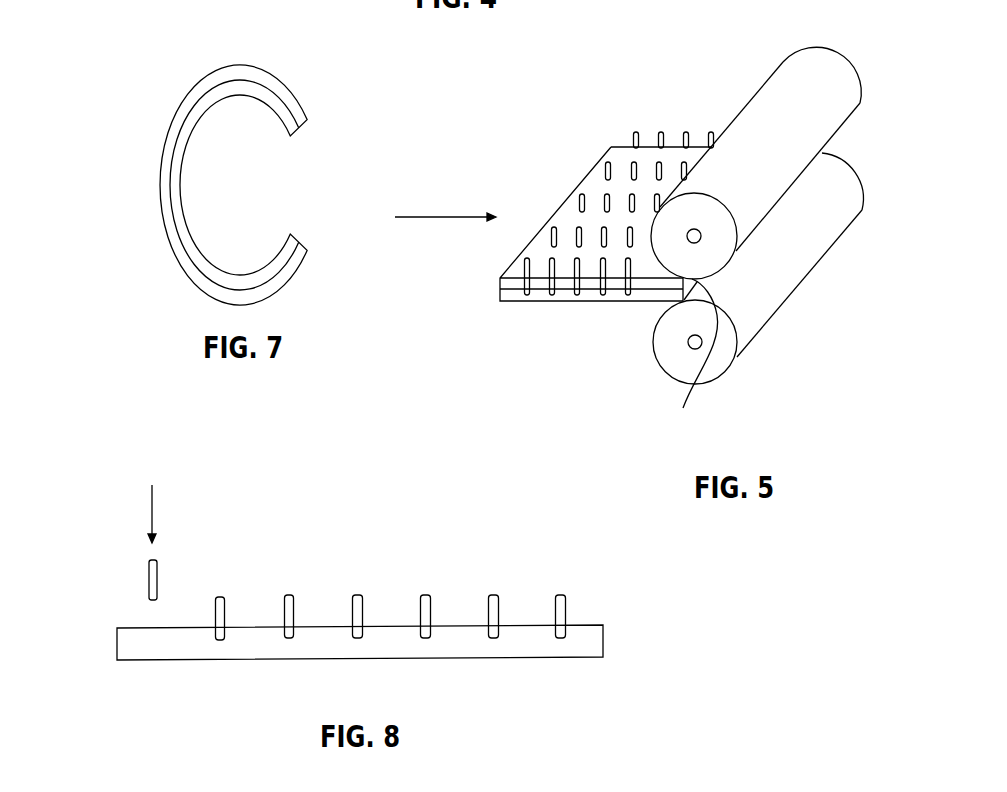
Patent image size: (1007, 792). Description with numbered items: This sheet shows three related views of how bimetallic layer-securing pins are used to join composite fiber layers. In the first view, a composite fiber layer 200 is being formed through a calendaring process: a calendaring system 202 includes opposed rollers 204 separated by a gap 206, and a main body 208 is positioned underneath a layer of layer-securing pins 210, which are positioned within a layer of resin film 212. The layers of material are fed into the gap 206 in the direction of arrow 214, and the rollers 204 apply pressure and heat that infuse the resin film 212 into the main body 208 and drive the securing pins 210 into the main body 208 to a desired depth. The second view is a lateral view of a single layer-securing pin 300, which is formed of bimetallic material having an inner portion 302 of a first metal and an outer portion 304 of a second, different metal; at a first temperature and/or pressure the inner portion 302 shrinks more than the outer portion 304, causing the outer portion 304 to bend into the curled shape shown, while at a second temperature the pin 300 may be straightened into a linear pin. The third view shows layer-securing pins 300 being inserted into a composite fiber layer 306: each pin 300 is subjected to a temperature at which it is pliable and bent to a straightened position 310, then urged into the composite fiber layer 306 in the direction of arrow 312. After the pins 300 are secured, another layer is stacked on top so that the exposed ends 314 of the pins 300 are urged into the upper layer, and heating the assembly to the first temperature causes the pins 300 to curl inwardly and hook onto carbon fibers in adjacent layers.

In FIG. 5, the composite fiber layer 200 is at (638, 222).
In FIG. 5, the calendaring system 202 is at (766, 222).
In FIG. 5, the rollers 204 is at (820, 70).
In FIG. 5, the gap 206 is at (758, 298).
In FIG. 5, the main body 208 is at (563, 201).
In FIG. 5, the layer-securing pins 210 is at (605, 171).
In FIG. 5, the resin film 212 is at (622, 146).
In FIG. 5, the arrow 214 is at (445, 215).
In FIG. 7, the layer-securing pin 300 is at (179, 169).
In FIG. 8, the layer-securing pin 300 is at (227, 613).
In FIG. 7, the inner portion 302 is at (187, 215).
In FIG. 7, the outer portion 304 is at (185, 273).
In FIG. 8, the composite fiber layer 306 is at (148, 653).
In FIG. 8, the straightened position 310 is at (147, 582).
In FIG. 8, the arrow 312 is at (148, 513).
In FIG. 8, the exposed ends 314 is at (217, 597).